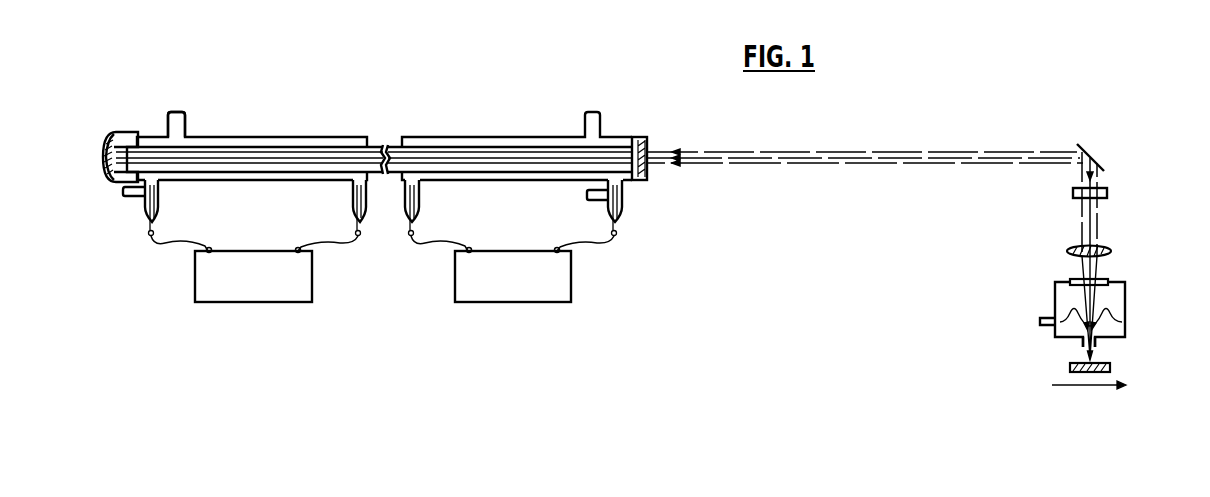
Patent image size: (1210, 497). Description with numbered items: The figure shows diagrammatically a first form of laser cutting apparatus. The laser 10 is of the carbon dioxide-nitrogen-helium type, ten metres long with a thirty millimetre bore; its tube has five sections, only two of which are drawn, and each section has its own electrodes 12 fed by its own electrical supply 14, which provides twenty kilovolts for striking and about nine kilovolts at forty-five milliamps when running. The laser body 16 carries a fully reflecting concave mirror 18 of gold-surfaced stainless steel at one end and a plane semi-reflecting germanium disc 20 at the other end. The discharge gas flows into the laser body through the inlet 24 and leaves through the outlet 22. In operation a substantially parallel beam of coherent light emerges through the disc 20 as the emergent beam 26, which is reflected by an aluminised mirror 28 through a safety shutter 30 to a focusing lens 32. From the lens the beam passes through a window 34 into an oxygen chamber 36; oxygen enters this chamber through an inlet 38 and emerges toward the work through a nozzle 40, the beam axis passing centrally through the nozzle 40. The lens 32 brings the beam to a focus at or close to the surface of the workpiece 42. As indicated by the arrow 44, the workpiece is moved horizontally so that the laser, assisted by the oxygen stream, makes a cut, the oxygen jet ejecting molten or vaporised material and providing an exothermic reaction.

The laser 10 is at (541, 122).
The electrodes 12 is at (156, 231).
The electrical supply 14 is at (305, 281).
The laser body 16 is at (192, 137).
The fully reflecting concave mirror 18 is at (103, 154).
The plane semi-reflecting germanium disc 20 is at (650, 151).
The outlet 22 is at (137, 197).
The inlet 24 is at (587, 196).
The emergent beam 26 is at (883, 151).
The aluminised mirror 28 is at (1085, 147).
The safety shutter 30 is at (1103, 186).
The focusing lens 32 is at (1103, 249).
The window 34 is at (1101, 281).
The oxygen chamber 36 is at (1126, 302).
The inlet 38 is at (1053, 318).
The nozzle 40 is at (1097, 345).
The workpiece 42 is at (1070, 366).
The arrow 44 is at (1095, 388).